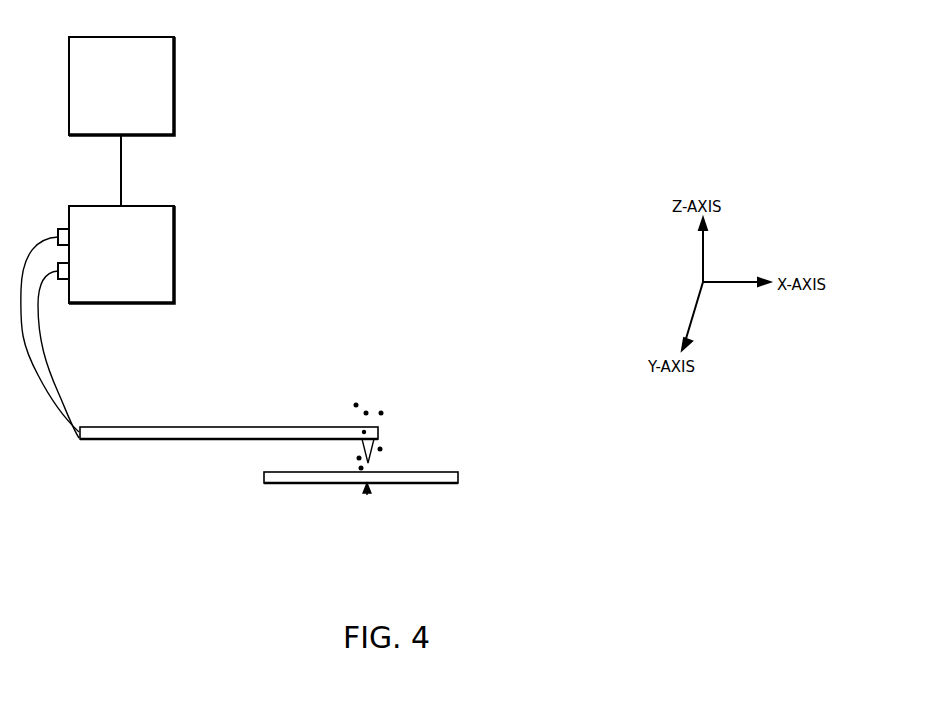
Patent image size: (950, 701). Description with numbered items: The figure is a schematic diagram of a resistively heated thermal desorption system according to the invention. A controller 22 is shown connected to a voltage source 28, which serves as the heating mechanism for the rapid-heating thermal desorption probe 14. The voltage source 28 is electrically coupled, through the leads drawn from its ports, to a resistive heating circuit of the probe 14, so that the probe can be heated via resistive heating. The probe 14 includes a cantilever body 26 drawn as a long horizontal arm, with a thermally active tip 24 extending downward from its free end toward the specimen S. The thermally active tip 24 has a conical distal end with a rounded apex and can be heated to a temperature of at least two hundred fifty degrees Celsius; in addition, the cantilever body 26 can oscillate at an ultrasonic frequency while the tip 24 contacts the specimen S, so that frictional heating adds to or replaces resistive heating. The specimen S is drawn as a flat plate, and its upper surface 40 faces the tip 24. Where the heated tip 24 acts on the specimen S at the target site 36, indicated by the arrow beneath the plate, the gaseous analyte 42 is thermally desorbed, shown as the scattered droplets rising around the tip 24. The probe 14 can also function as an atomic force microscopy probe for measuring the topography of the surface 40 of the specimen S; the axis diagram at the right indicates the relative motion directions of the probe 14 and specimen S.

The rapid-heating thermal desorption probe 14 is at (302, 403).
The controller 22 is at (121, 86).
The thermally active tip 24 is at (356, 458).
The cantilever body 26 is at (153, 427).
The voltage source 28 is at (116, 254).
The target site 36 is at (367, 495).
The surface 40 is at (420, 471).
The gaseous analyte 42 is at (375, 400).
The specimen S is at (450, 471).